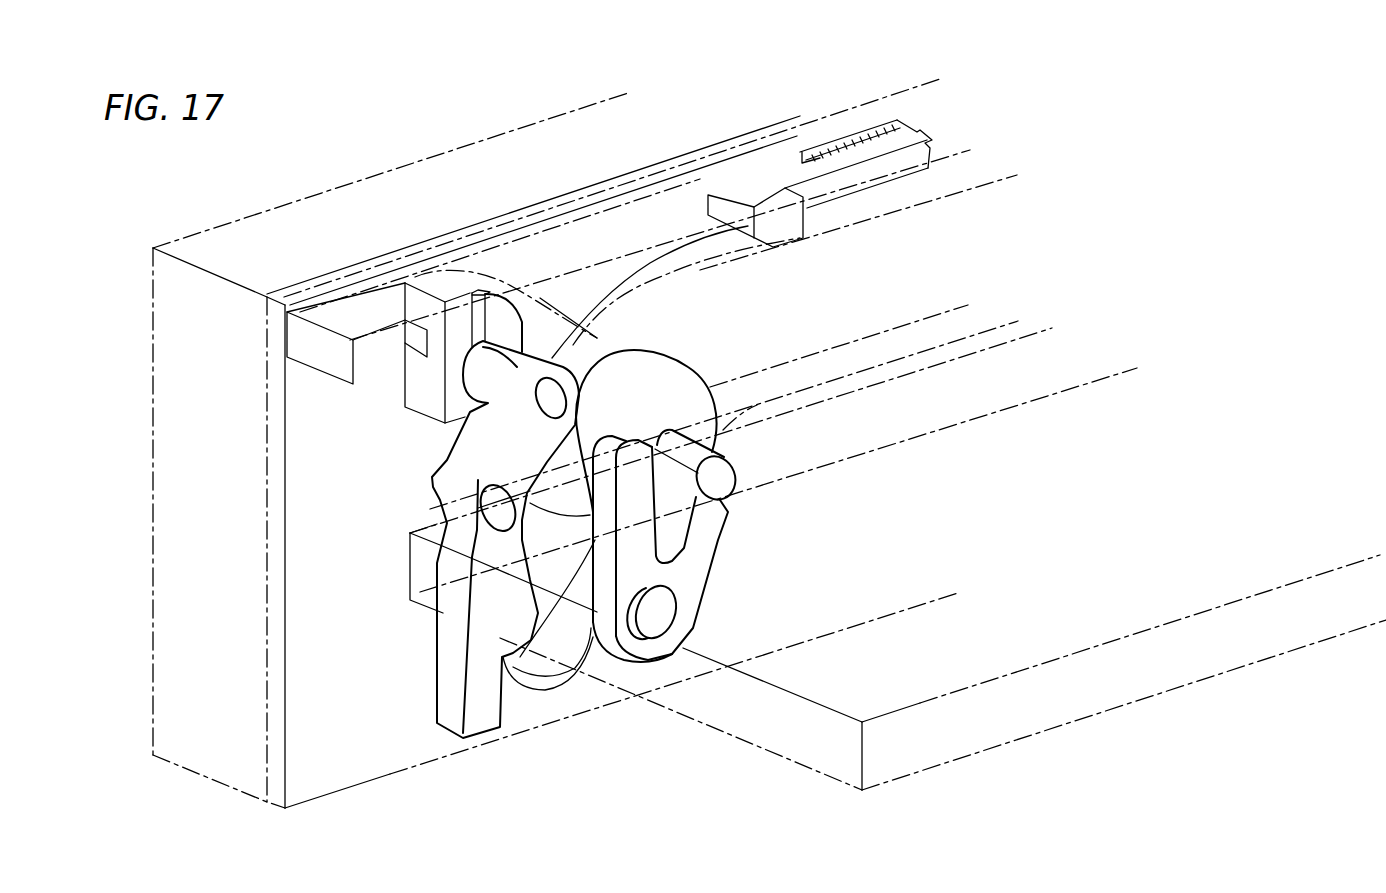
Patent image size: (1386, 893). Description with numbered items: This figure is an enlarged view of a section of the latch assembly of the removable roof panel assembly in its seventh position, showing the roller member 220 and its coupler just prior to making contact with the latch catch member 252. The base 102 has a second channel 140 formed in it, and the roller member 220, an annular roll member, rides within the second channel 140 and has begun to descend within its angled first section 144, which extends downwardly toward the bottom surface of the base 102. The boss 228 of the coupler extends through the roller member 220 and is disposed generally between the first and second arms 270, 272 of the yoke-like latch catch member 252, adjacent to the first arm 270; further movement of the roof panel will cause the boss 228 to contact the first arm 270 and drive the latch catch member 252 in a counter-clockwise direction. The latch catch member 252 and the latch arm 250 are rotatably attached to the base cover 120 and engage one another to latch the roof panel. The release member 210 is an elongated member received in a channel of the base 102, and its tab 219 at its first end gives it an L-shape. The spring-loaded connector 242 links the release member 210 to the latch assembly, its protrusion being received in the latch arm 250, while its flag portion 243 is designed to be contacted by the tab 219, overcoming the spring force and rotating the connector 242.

The base 102 is at (498, 136).
The base cover 120 is at (277, 522).
The second channel 140 is at (966, 278).
The angled first section 144 is at (430, 621).
The release member 210 is at (847, 138).
The tab 219 is at (790, 233).
The roller member 220 is at (692, 360).
The boss 228 is at (723, 480).
The connector 242 is at (457, 377).
The flag portion 243 is at (493, 298).
The latch arm 250 is at (428, 493).
The latch catch member 252 is at (696, 549).
The first arm 270 is at (610, 520).
The second arm 272 is at (698, 567).